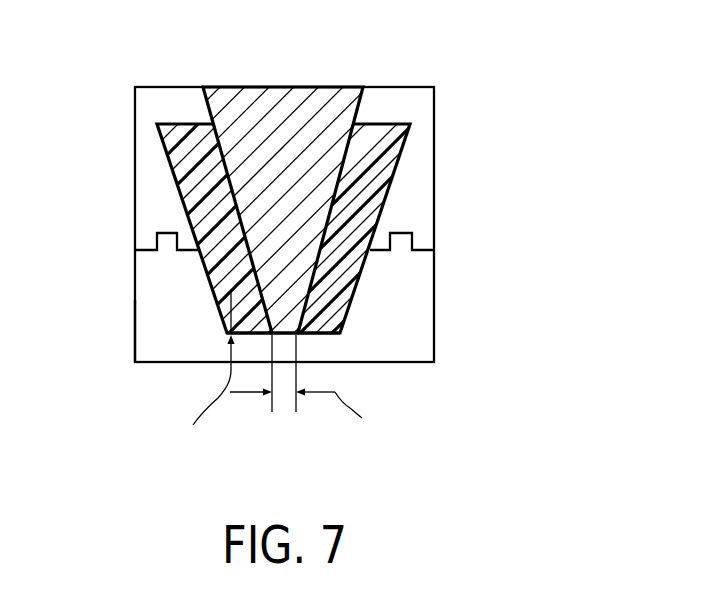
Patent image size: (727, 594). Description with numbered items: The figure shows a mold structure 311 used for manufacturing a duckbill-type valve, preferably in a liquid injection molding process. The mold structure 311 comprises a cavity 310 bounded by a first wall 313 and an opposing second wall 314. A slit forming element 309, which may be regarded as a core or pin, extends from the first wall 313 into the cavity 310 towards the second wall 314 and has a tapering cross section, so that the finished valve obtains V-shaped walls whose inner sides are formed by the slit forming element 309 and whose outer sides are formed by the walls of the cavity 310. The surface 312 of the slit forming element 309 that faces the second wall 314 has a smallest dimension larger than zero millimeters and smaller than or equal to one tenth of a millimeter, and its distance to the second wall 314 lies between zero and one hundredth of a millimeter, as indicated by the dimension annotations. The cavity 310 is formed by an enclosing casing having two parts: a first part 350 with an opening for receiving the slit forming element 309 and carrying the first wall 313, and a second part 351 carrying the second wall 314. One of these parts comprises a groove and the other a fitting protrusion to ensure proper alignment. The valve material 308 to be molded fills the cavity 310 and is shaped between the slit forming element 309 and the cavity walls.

The mold structure 311 is at (482, 75).
The first part 350 is at (434, 136).
The second part 351 is at (134, 338).
The slit forming element 309 is at (364, 88).
The valve material 308 is at (350, 238).
The first wall 313 is at (385, 131).
The cavity 310 is at (358, 280).
The second wall 314 is at (316, 317).
The surface 312 is at (287, 340).